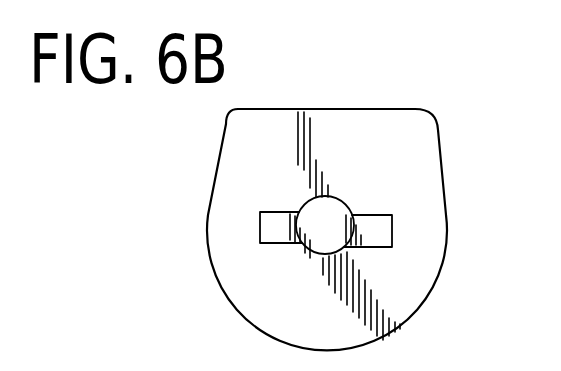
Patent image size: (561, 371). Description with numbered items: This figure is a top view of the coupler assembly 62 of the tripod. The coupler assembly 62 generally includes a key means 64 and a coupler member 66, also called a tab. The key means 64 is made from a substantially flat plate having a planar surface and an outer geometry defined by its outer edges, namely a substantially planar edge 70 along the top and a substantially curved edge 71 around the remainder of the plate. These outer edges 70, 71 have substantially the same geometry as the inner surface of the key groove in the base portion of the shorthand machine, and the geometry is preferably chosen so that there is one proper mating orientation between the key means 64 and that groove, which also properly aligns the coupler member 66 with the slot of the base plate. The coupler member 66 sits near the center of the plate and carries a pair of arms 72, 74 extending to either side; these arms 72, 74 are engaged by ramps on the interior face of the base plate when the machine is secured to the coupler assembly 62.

The coupler assembly 62 is at (190, 238).
The key means 64 is at (240, 173).
The coupler member 66 is at (327, 196).
The planar edge 70 is at (290, 109).
The curved edge 71 is at (378, 332).
The arm 72 is at (284, 228).
The arm 74 is at (373, 224).